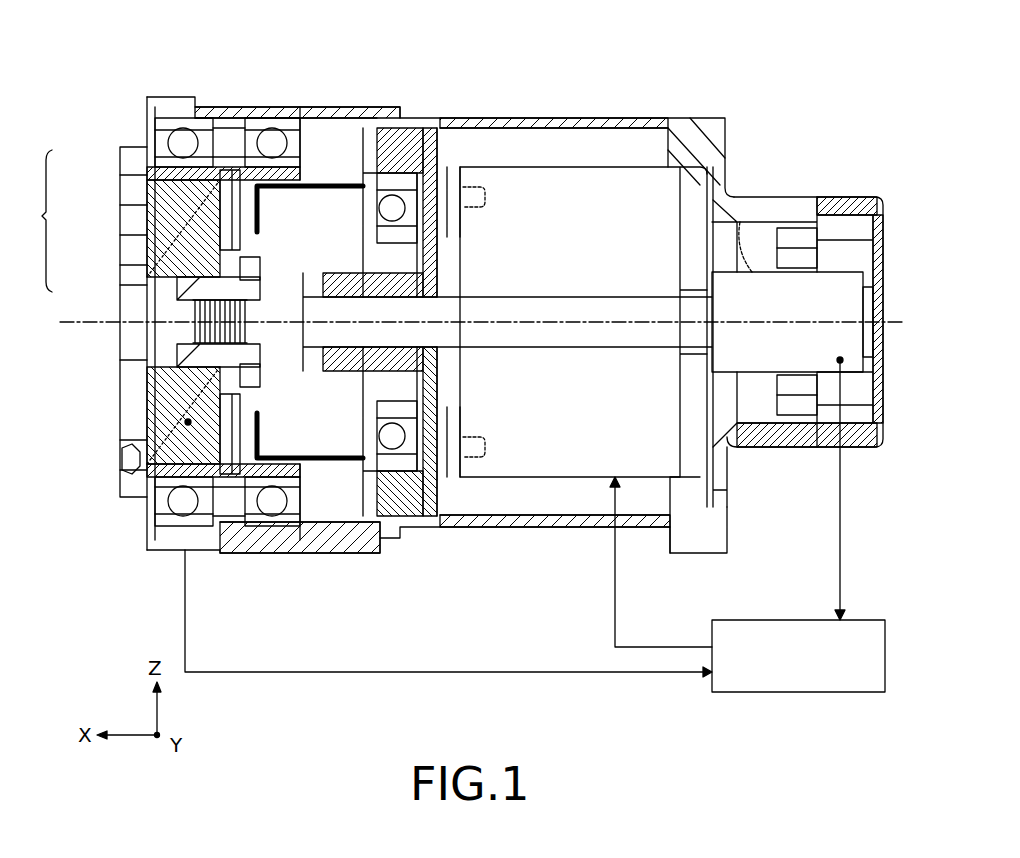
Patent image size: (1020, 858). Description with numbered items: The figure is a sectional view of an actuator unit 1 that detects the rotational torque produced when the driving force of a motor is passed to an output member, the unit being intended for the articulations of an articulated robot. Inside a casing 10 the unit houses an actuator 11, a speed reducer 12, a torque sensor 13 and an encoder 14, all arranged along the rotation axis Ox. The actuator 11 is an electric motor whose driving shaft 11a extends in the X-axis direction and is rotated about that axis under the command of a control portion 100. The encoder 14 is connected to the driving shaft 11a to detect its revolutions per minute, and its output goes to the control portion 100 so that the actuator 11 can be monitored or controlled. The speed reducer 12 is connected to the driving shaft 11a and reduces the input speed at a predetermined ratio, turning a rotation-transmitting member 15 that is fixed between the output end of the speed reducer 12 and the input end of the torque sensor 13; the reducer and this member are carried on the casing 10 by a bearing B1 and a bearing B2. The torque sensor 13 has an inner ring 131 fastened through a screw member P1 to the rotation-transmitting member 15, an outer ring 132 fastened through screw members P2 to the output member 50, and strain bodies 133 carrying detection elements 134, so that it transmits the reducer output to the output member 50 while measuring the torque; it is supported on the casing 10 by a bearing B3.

The actuator unit 1 is at (724, 60).
The casing 10 is at (650, 110).
The actuator 11 is at (563, 180).
The driving shaft 11a is at (530, 297).
The speed reducer 12 is at (316, 132).
The torque sensor 13 is at (139, 312).
The inner ring 131 is at (150, 271).
The outer ring 132 is at (150, 168).
The strain bodies 133 is at (148, 242).
The detection elements 134 is at (152, 212).
The encoder 14 is at (768, 215).
The rotation-transmitting member 15 is at (225, 548).
The output member 50 is at (126, 135).
The control portion 100 is at (768, 620).
The bearing B1 is at (392, 132).
The bearing B2 is at (265, 112).
The bearing B3 is at (176, 108).
The screw member P1 is at (150, 362).
The screw members P2 is at (120, 458).
The rotation axis Ox is at (108, 322).